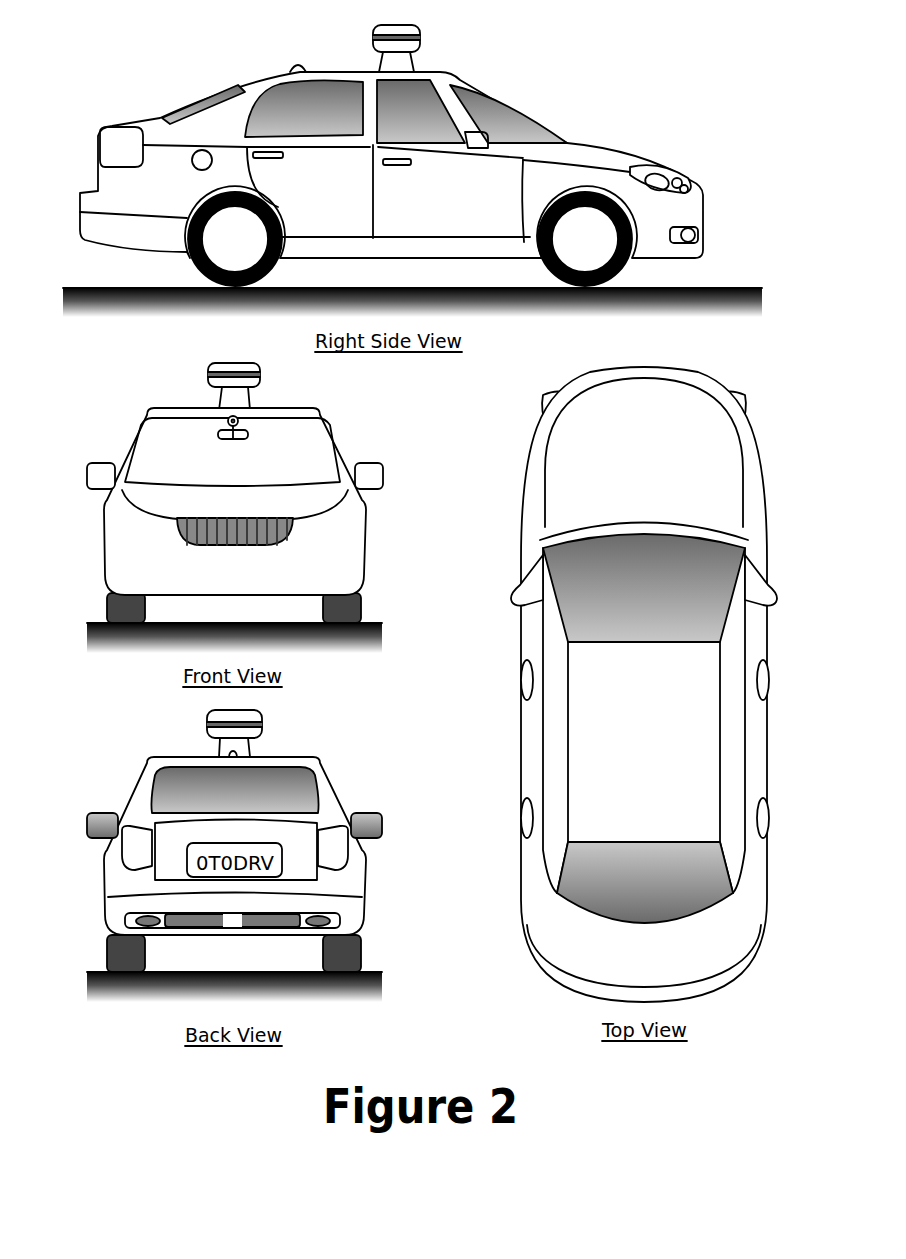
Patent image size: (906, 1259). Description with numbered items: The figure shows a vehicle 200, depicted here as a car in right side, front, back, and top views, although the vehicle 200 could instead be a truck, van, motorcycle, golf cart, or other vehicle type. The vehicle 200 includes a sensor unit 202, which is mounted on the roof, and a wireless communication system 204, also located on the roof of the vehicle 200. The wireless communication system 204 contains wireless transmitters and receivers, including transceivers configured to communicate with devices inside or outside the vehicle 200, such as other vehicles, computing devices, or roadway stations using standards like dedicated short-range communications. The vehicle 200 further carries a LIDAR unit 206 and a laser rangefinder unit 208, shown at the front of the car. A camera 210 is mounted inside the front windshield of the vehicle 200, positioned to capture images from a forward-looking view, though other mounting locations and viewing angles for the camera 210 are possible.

The vehicle 200 is at (73, 110).
The sensor unit 202 is at (420, 47).
The wireless communication system 204 is at (297, 62).
The LIDAR unit 206 is at (701, 232).
The laser rangefinder unit 208 is at (688, 187).
The camera 210 is at (250, 426).